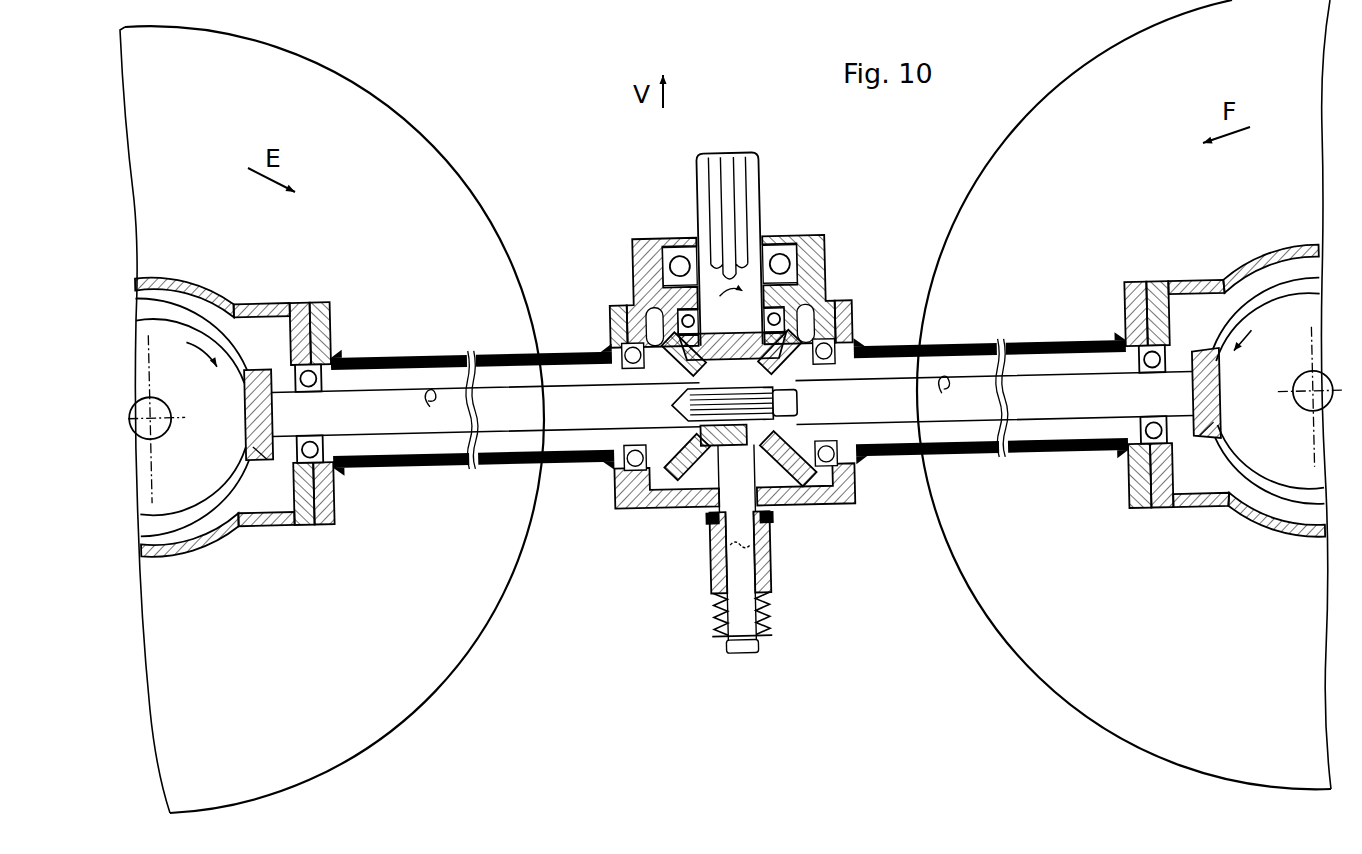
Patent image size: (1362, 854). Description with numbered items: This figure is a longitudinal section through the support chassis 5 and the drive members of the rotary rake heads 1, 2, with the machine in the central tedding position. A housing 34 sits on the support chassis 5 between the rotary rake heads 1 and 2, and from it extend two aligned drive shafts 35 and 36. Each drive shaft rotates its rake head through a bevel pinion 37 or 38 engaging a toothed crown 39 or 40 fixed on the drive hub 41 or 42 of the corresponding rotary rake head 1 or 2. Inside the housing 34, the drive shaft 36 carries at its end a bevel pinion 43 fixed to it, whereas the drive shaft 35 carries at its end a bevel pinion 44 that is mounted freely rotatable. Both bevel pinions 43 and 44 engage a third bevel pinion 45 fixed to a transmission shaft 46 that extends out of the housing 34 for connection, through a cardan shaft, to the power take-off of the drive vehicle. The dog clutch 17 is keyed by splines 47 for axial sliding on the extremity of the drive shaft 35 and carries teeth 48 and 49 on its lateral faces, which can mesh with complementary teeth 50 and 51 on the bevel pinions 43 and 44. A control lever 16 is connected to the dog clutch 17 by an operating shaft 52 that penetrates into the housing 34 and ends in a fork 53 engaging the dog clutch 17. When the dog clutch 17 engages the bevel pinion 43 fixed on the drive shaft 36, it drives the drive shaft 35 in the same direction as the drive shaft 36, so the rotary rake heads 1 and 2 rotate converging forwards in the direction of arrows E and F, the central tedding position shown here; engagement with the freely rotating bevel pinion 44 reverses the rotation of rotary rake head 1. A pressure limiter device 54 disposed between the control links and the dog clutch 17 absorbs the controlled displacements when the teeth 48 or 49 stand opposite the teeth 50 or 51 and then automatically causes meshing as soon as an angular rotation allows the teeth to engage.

The rotary rake head 1 is at (418, 112).
The rotary rake head 2 is at (1040, 82).
The support chassis 5 is at (497, 463).
The control lever 16 is at (763, 527).
The dog clutch 17 is at (766, 463).
The housing 34 is at (660, 340).
The drive shaft 35 is at (403, 420).
The drive shaft 36 is at (1053, 400).
The bevel pinion 37 is at (263, 443).
The bevel pinion 38 is at (1197, 443).
The toothed crown 39 is at (208, 513).
The toothed crown 40 is at (1277, 497).
The drive hub 41 is at (234, 673).
The drive hub 42 is at (1194, 653).
The bevel pinion 43 is at (838, 340).
The bevel pinion 44 is at (615, 343).
The third bevel pinion 45 is at (782, 337).
The transmission shaft 46 is at (745, 213).
The splines 47 is at (670, 467).
The teeth 48 is at (708, 466).
The teeth 49 is at (800, 452).
The complementary teeth 50 is at (616, 480).
The complementary teeth 51 is at (862, 470).
The operating shaft 52 is at (733, 560).
The fork 53 is at (748, 459).
The pressure limiter device 54 is at (768, 600).